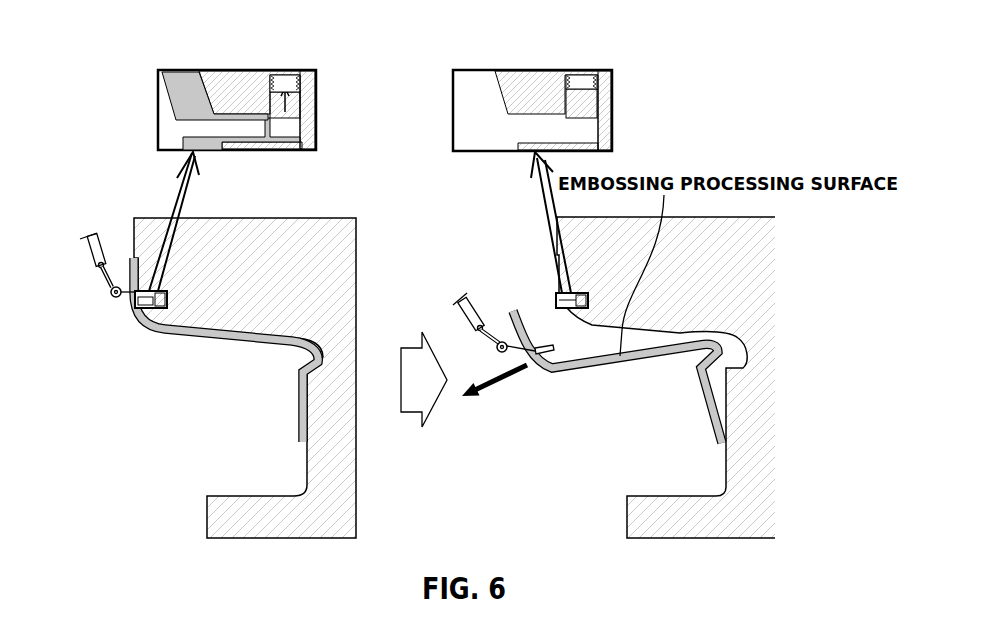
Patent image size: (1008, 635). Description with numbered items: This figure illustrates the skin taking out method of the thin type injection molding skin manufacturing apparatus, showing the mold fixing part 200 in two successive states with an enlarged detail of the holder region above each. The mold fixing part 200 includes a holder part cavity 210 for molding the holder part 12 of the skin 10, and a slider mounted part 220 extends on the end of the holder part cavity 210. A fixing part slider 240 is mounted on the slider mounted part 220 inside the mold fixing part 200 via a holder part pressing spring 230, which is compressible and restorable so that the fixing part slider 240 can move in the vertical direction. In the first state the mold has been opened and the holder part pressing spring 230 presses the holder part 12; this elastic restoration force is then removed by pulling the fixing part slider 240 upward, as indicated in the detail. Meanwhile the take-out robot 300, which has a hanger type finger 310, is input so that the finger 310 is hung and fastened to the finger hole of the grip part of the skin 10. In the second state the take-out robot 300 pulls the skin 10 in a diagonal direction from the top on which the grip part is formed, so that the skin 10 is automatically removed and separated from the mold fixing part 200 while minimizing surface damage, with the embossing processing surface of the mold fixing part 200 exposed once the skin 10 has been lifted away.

The skin 10 is at (173, 77).
The holder part 12 is at (286, 139).
The mold fixing part 200 is at (337, 220).
The holder part cavity 210 is at (248, 117).
The slider mounted part 220 is at (283, 77).
The holder part pressing spring 230 is at (303, 79).
The fixing part slider 240 is at (305, 102).
The take-out robot 300 is at (84, 250).
The finger 310 is at (104, 283).